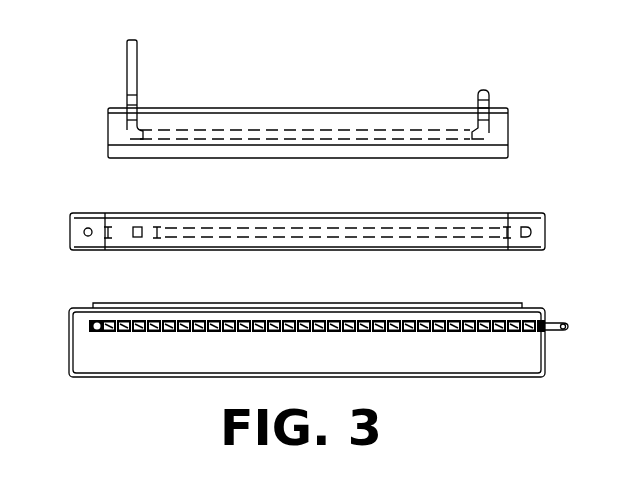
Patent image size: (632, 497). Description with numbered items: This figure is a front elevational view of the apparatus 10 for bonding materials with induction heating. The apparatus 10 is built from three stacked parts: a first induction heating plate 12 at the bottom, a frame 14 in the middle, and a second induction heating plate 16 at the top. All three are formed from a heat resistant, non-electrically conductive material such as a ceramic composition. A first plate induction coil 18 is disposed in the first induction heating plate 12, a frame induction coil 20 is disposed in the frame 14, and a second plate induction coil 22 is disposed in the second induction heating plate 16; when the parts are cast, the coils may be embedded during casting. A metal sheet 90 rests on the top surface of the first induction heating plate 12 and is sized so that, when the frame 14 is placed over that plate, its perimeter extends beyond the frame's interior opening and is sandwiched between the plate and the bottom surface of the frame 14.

The apparatus 10 is at (625, 375).
The first induction heating plate 12 is at (478, 357).
The frame 14 is at (533, 218).
The second induction heating plate 16 is at (417, 120).
The first plate induction coil 18 is at (172, 330).
The frame induction coil 20 is at (322, 237).
The second plate induction coil 22 is at (273, 135).
The metal sheet 90 is at (502, 305).